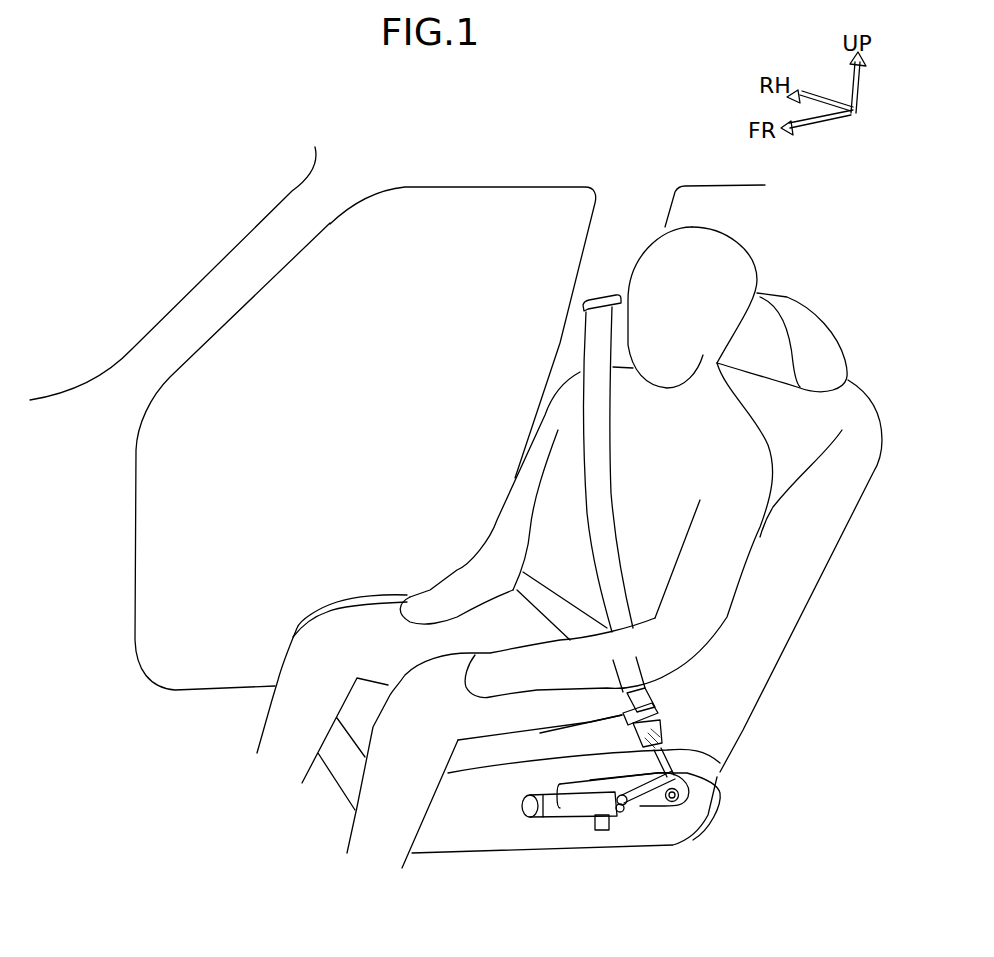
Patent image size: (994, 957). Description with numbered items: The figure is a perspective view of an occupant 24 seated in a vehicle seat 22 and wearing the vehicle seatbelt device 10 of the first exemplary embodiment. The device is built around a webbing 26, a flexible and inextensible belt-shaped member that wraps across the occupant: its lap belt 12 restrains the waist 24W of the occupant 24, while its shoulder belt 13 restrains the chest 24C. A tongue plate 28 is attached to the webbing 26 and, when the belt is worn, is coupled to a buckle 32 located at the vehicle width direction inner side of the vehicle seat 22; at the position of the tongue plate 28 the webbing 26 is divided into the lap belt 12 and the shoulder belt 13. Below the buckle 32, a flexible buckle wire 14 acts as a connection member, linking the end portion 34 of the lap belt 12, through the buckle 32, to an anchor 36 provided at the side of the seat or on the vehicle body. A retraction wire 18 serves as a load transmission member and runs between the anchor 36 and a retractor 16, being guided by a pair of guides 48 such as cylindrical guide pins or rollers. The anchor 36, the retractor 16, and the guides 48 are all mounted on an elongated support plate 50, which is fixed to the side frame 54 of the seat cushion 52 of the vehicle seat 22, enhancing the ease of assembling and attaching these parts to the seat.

The vehicle seatbelt device 10 is at (455, 347).
The lap belt 12 is at (540, 572).
The shoulder belt 13 is at (612, 505).
The buckle wire 14 is at (670, 755).
The retractor 16 is at (573, 830).
The retraction wire 18 is at (652, 790).
The vehicle seat 22 is at (872, 350).
The occupant 24 is at (752, 252).
The chest 24C is at (628, 528).
The waist 24W is at (563, 608).
The webbing 26 is at (627, 467).
The tongue plate 28 is at (683, 728).
The buckle 32 is at (662, 717).
The end portion 34 is at (615, 733).
The anchor 36 is at (680, 795).
The guides 48 is at (615, 800).
The support plate 50 is at (680, 822).
The seat cushion 52 is at (478, 752).
The side frame 54 is at (482, 827).